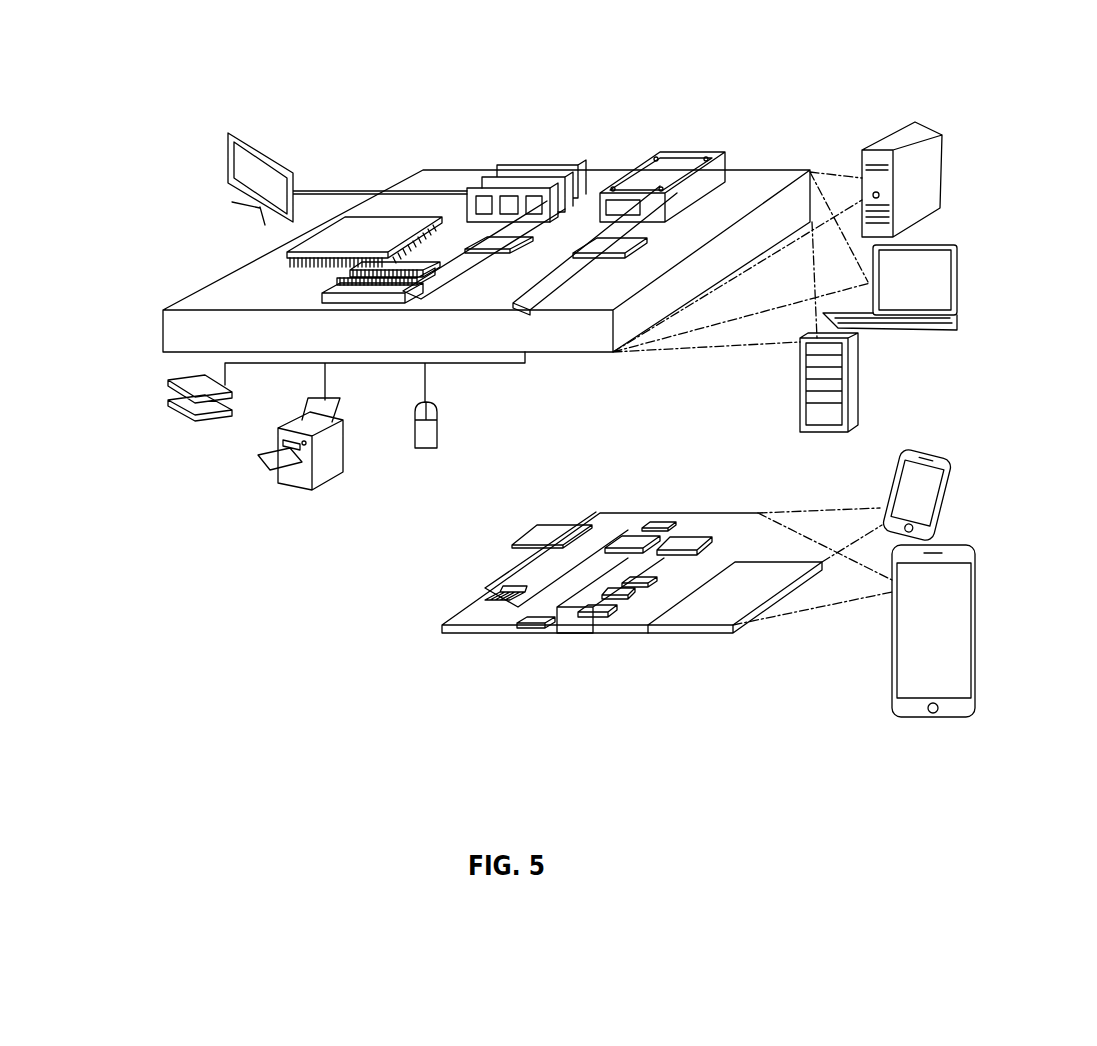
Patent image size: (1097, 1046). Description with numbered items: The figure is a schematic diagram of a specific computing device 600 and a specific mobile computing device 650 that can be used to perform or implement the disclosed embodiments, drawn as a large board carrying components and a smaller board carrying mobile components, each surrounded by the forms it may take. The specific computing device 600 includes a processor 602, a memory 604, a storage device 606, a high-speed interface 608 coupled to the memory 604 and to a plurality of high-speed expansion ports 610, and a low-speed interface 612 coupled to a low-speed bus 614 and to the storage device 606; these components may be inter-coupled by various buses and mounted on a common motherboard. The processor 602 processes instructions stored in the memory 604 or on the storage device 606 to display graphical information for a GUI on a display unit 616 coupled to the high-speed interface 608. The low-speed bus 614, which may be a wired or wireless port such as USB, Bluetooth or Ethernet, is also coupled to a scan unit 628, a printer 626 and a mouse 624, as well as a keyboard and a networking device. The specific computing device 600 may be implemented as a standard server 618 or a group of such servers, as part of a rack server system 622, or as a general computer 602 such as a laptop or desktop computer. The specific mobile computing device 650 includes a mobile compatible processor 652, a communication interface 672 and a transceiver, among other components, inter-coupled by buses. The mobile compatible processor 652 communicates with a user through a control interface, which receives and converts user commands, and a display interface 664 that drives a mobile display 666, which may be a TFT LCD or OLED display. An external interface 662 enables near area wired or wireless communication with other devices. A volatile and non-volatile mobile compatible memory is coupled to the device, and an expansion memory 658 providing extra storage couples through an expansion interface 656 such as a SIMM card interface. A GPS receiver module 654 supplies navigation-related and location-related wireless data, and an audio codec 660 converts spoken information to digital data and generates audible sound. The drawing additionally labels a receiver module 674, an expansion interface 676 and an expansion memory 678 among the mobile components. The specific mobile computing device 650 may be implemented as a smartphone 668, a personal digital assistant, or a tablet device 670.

The specific computing device 600 is at (384, 173).
The processor / general computer 602 is at (333, 283).
The memory 604 is at (540, 163).
The storage device 606 is at (658, 150).
The high-speed interface 608 is at (487, 243).
The high-speed expansion ports 610 is at (287, 251).
The low-speed interface 612 is at (622, 240).
The low-speed bus 614 is at (535, 305).
The display unit 616 is at (226, 145).
The standard server 618 is at (944, 134).
The rack server system 622 is at (800, 358).
The mouse 624 is at (413, 442).
The printer 626 is at (298, 486).
The scan unit 628 is at (168, 402).
The specific mobile computing device 650 is at (440, 624).
The mobile compatible processor 652 is at (565, 634).
The GPS receiver module 654 is at (492, 598).
The expansion interface 656 is at (615, 600).
The expansion memory 658 is at (700, 535).
The audio codec 660 is at (638, 588).
The external interface 662 is at (527, 629).
The display interface 664 is at (600, 634).
The mobile display 666 is at (748, 630).
The smartphone 668 is at (900, 455).
The tablet device 670 is at (893, 700).
The communication interface 672 is at (633, 537).
The receiver module 674 is at (652, 520).
The expansion interface 676 is at (586, 526).
The expansion memory 678 is at (515, 538).